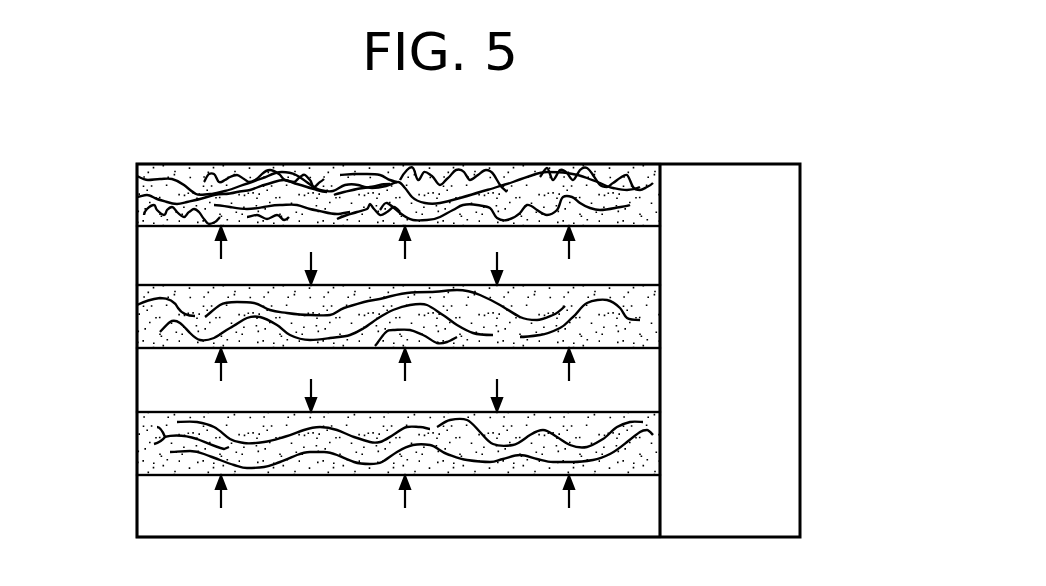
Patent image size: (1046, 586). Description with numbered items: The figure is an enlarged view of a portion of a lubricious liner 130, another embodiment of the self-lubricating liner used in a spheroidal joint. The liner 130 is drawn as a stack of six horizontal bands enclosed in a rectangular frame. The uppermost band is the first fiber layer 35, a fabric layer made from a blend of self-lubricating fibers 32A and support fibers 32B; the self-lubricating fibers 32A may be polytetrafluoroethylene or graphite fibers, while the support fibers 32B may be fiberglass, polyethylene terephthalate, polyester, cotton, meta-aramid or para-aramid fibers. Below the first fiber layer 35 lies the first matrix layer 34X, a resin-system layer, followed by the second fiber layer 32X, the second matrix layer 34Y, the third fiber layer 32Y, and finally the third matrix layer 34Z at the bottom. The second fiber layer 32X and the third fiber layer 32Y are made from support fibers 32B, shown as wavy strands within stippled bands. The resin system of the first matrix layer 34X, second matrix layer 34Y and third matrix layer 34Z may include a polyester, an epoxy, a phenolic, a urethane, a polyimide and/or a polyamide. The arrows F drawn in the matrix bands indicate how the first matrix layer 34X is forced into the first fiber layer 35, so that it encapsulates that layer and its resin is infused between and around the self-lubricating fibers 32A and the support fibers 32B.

The lubricious liner 130 is at (800, 312).
The first fiber layer 35 is at (660, 208).
The self-lubricating fibers 32A is at (137, 197).
The support fibers 32B is at (137, 176).
The first matrix layer 34X is at (660, 258).
The second fiber layer 32X is at (660, 315).
The second matrix layer 34Y is at (660, 381).
The third fiber layer 32Y is at (660, 443).
The third matrix layer 34Z is at (660, 503).
The arrows F is at (221, 502).